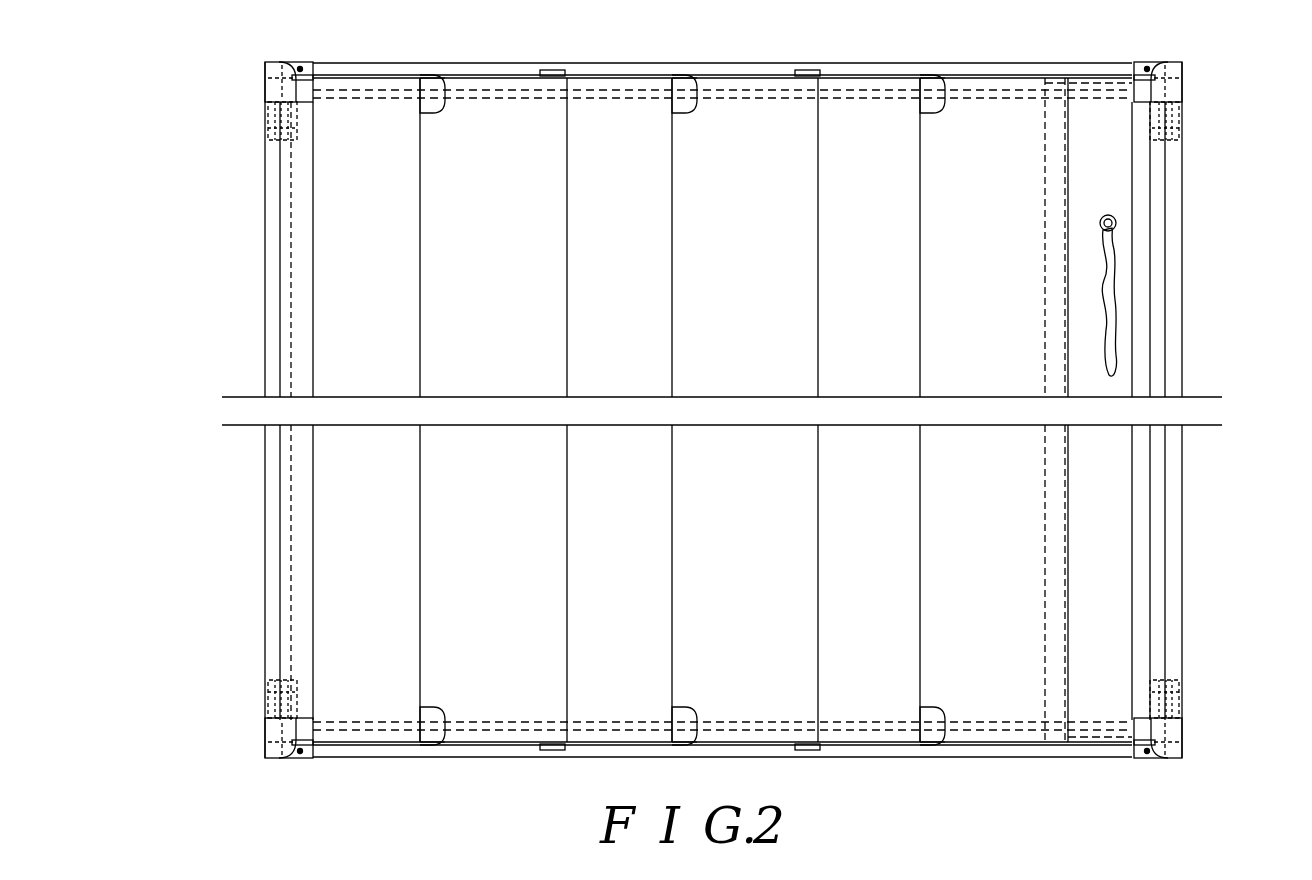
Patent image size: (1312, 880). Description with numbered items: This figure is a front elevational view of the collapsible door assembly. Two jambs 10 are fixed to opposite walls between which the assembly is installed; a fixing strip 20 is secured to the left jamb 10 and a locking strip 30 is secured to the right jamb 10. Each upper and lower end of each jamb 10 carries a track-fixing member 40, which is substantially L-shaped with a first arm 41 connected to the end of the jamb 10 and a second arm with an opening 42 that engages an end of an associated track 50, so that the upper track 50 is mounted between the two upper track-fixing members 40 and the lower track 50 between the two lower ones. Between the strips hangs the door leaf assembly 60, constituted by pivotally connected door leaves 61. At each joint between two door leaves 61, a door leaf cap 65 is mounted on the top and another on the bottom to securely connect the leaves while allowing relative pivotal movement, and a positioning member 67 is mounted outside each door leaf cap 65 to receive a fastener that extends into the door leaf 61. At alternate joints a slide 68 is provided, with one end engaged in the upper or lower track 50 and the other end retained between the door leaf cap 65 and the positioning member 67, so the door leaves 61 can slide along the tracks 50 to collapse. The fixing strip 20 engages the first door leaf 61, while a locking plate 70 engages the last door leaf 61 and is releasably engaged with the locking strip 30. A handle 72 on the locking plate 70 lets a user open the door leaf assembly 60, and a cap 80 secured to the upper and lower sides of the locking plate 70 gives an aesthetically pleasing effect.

The jamb 10 is at (270, 191).
The fixing strip 20 is at (283, 250).
The locking strip 30 is at (1165, 193).
The track-fixing member 40 is at (266, 66).
The first arm 41 is at (268, 118).
The opening 42 is at (300, 63).
The track 50 is at (725, 66).
The door leaf assembly 60 is at (1025, 704).
The door leaf 61 is at (858, 120).
The door leaf cap 65 is at (930, 76).
The positioning member 67 is at (676, 74).
The slide 68 is at (804, 80).
The locking plate 70 is at (1125, 372).
The handle 72 is at (1110, 305).
The cap 80 is at (1048, 75).